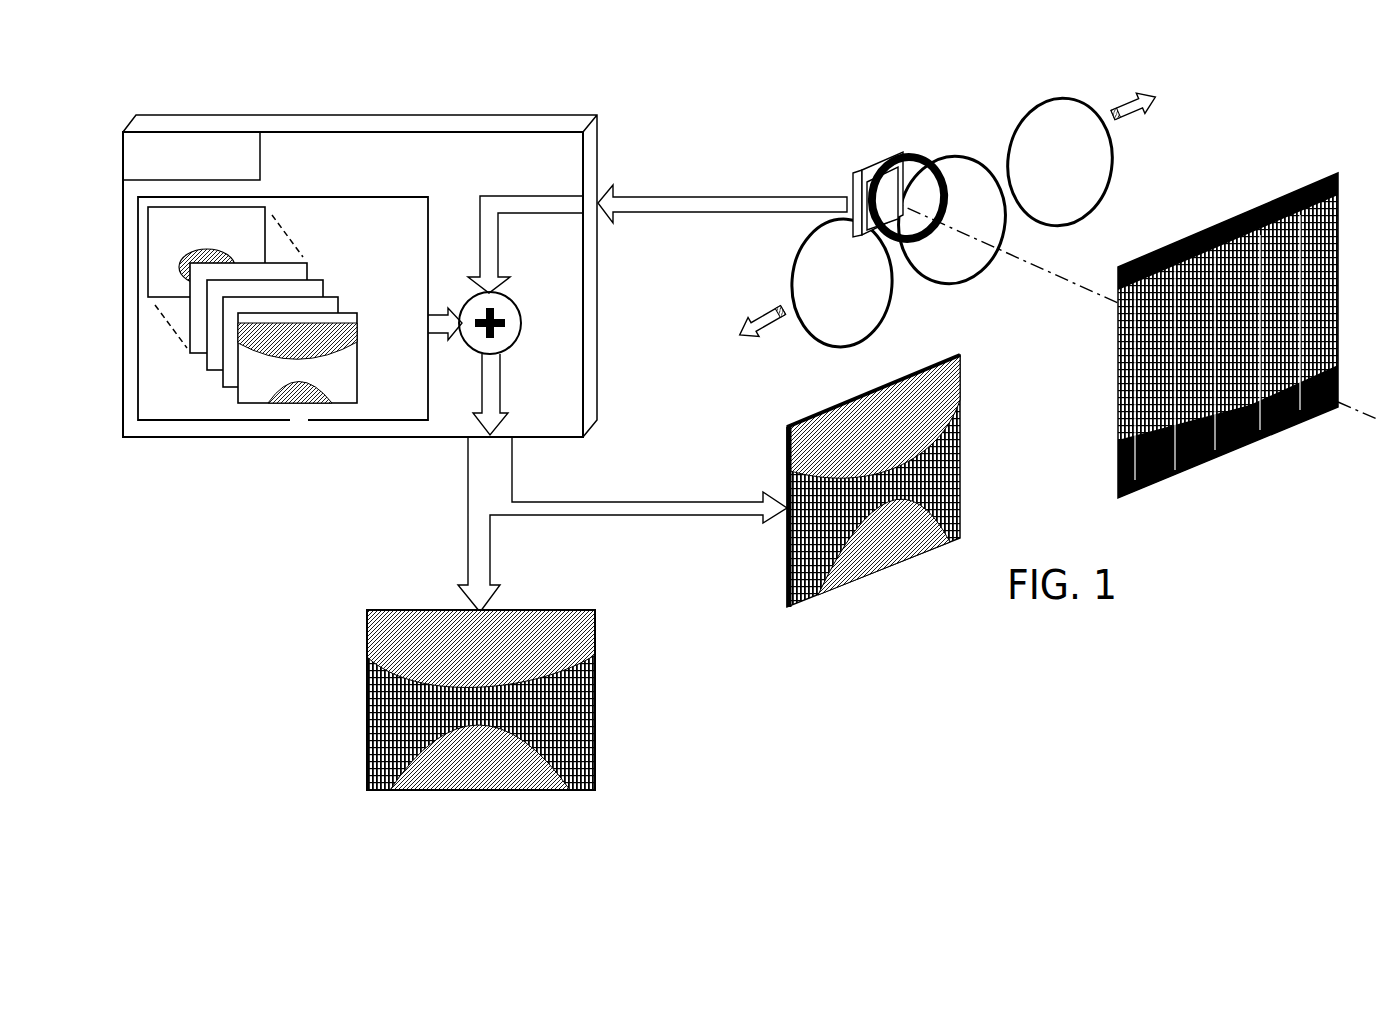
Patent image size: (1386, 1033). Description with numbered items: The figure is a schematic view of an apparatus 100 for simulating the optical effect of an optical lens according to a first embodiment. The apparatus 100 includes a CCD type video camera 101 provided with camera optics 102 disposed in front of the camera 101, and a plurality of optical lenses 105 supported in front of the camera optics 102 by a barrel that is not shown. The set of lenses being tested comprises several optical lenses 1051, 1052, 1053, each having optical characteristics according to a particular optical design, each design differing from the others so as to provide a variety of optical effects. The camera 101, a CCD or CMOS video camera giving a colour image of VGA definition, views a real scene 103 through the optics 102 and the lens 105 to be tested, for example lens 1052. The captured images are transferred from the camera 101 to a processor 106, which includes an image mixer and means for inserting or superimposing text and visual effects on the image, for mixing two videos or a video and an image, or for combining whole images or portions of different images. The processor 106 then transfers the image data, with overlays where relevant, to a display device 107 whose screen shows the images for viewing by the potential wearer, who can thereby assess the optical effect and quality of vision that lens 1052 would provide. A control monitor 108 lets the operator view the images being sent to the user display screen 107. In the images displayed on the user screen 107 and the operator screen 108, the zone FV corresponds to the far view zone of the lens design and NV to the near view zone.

The apparatus for simulating the optical effect of an optical lens 100 is at (812, 148).
The CCD type video camera 101 is at (860, 172).
The camera optics 102 is at (910, 167).
The real scene 103 is at (1295, 202).
The optical lenses 105 is at (1096, 125).
The optical lens 1051 is at (1077, 170).
The optical lens 1052 is at (960, 257).
The optical lens 1053 is at (827, 313).
The processor 106 is at (485, 152).
The display device 107 is at (952, 458).
The control monitor 108 is at (577, 745).